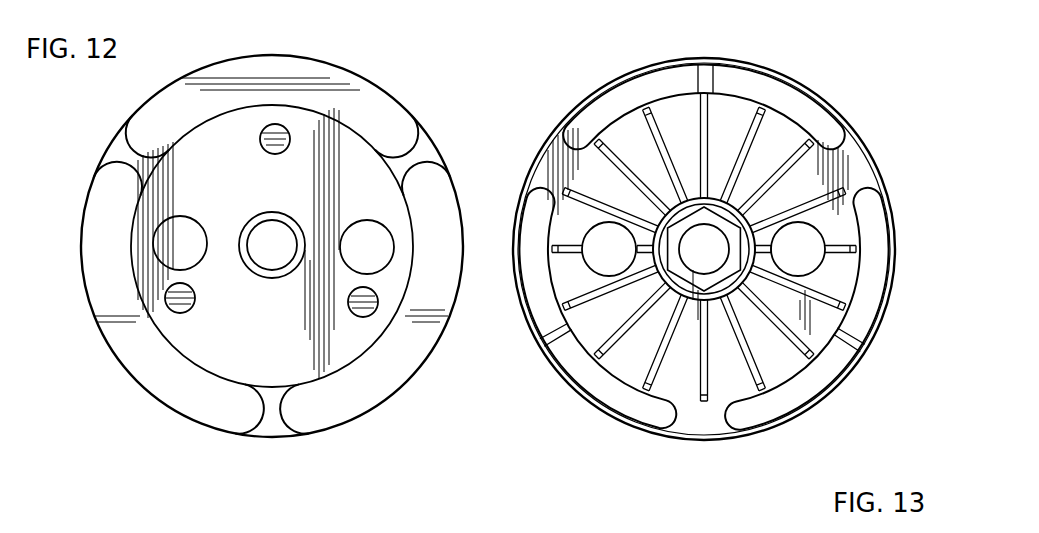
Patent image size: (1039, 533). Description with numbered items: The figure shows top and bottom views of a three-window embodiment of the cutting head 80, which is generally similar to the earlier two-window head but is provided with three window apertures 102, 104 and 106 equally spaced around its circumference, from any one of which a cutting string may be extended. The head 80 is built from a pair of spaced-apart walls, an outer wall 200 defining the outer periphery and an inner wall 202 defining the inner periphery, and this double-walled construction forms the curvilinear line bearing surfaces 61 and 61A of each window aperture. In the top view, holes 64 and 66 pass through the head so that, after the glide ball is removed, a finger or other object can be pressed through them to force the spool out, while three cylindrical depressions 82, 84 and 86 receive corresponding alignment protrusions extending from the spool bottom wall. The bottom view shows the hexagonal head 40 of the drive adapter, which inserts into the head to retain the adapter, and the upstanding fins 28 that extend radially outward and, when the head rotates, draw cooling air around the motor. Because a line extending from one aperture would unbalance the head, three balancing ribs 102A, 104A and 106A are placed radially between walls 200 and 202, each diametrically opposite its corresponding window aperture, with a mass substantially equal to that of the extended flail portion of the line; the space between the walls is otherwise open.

In FIG. 13, the upstanding fins 28 is at (764, 128).
In FIG. 13, the hexagonal head 40 is at (687, 273).
In FIG. 12, the curvilinear line bearing surface 61 is at (258, 412).
In FIG. 12, the curvilinear line bearing surface 61A is at (318, 430).
In FIG. 12, the hole 64 is at (156, 254).
In FIG. 13, the hole 64 is at (823, 240).
In FIG. 12, the hole 66 is at (380, 229).
In FIG. 13, the hole 66 is at (588, 259).
In FIG. 12, the head 80 is at (210, 66).
In FIG. 13, the head 80 is at (648, 68).
In FIG. 12, the cylindrical depression 82 is at (282, 124).
In FIG. 12, the cylindrical depression 84 is at (172, 310).
In FIG. 12, the cylindrical depression 86 is at (369, 315).
In FIG. 12, the window aperture 102 is at (123, 150).
In FIG. 13, the balancing rib 102A is at (858, 342).
In FIG. 12, the window aperture 104 is at (272, 422).
In FIG. 13, the balancing rib 104A is at (712, 84).
In FIG. 12, the window aperture 106 is at (427, 153).
In FIG. 13, the balancing rib 106A is at (546, 337).
In FIG. 12, the outer wall 200 is at (195, 422).
In FIG. 13, the outer wall 200 is at (705, 442).
In FIG. 12, the inner wall 202 is at (190, 365).
In FIG. 13, the inner wall 202 is at (792, 386).